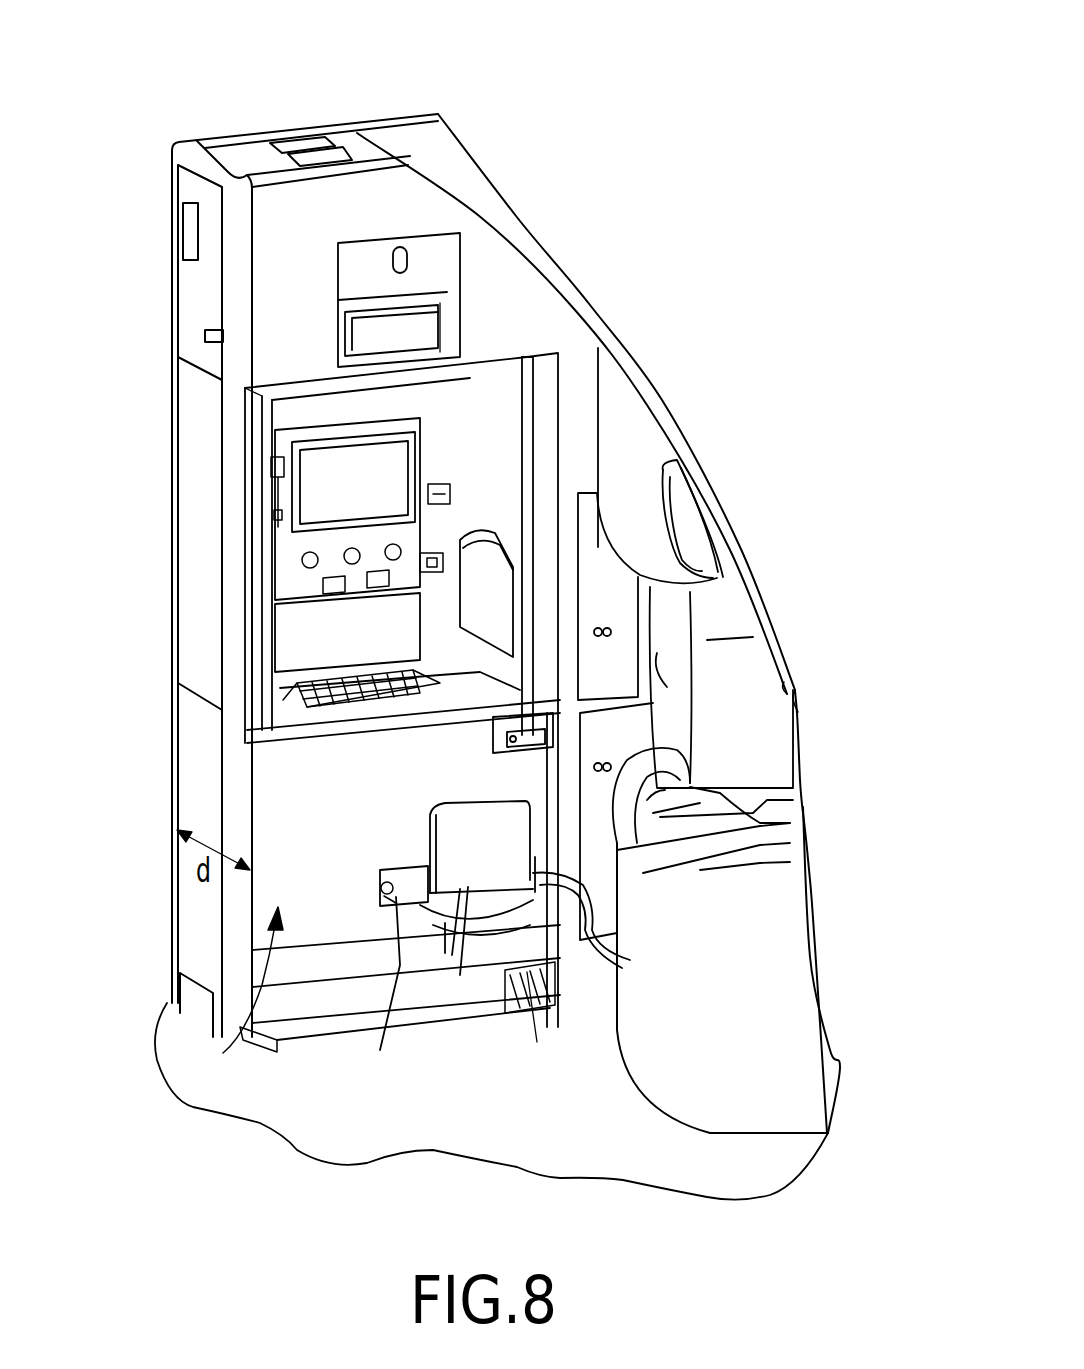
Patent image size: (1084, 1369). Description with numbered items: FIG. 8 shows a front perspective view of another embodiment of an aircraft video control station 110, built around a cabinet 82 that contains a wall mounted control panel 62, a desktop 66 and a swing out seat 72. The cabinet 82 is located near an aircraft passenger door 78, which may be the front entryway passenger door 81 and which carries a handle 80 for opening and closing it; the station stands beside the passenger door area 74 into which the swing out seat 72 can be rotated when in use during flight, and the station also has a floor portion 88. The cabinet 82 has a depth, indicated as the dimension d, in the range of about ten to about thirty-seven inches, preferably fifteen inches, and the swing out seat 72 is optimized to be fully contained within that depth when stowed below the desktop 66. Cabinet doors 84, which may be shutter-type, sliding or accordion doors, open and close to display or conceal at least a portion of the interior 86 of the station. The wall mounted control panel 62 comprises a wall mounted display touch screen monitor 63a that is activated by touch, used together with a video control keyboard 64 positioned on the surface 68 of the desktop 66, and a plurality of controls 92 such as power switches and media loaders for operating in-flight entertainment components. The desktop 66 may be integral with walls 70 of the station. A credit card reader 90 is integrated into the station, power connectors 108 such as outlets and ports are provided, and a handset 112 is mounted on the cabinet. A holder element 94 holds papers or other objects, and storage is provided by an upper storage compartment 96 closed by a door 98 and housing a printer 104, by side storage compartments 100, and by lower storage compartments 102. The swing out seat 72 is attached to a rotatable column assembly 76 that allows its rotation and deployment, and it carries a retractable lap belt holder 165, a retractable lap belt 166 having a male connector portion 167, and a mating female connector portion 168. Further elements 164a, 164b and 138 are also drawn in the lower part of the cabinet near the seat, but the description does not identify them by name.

The aircraft video control station 110 is at (600, 120).
The side storage compartment 100 is at (185, 291).
The door 98 is at (447, 262).
The printer 104 is at (362, 333).
The upper storage compartment 96 is at (455, 330).
The walls 70 is at (410, 420).
The interior 86 is at (512, 438).
The cabinet doors 84 is at (265, 430).
The handset 112 is at (271, 468).
The wall mounted control panel 62 is at (437, 408).
The wall mounted display touch screen monitor 63a is at (345, 460).
The controls 92 is at (312, 585).
The credit card reader 90 is at (440, 483).
The power connectors 108 is at (433, 553).
The video control keyboard 64 is at (397, 703).
The holder element 94 is at (570, 563).
The lower storage compartment 102 is at (627, 602).
The aircraft passenger door 78 is at (783, 943).
The front entryway passenger door 81 is at (783, 762).
The handle 80 is at (760, 827).
The female connector portion 168 is at (533, 833).
The hose 164b is at (585, 930).
The hose 164a is at (373, 997).
The swing out seat 72 is at (483, 963).
The filter 138 is at (563, 1000).
The rotatable column assembly 76 is at (534, 1024).
The retractable lap belt 166 is at (398, 868).
The male connector portion 167 is at (382, 880).
The retractable lap belt holder 165 is at (387, 885).
The surface 68 is at (300, 723).
The desktop 66 is at (347, 733).
The cabinet 82 is at (245, 1002).
The floor portion 88 is at (277, 1013).
The passenger door area 74 is at (315, 1140).